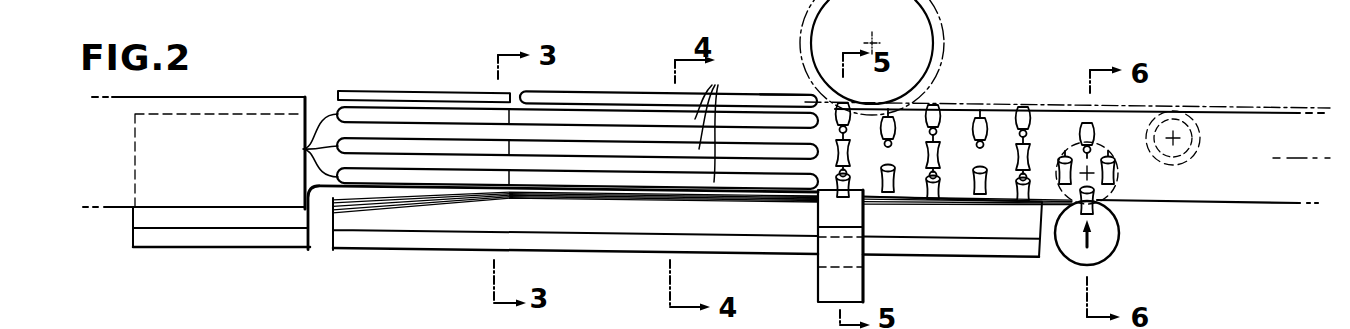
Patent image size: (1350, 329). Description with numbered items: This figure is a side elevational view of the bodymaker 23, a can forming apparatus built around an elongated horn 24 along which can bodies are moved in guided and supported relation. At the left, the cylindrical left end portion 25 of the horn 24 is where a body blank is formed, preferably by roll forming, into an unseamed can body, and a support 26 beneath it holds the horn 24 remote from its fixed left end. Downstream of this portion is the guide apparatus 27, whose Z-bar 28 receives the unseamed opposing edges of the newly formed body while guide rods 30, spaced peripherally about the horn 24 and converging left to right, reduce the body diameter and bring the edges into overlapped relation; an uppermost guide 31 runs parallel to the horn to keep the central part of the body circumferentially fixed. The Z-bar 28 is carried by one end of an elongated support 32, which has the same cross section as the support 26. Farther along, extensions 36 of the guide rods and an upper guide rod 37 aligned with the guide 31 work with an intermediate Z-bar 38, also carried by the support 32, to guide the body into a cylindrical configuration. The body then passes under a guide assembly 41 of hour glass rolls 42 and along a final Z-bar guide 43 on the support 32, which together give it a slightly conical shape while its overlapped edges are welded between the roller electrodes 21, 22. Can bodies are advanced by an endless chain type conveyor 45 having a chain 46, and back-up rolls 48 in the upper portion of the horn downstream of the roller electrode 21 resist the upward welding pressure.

The roller electrode 21 is at (1120, 172).
The roller electrode 22 is at (1108, 233).
The bodymaker 23 is at (590, 88).
The horn 24 is at (1233, 192).
The left end portion of the horn 25 is at (255, 100).
The support 26 is at (201, 250).
The guide apparatus 27 is at (446, 89).
The Z-bar 28 is at (423, 202).
The guide rods 30 is at (302, 152).
The uppermost guide 31 is at (375, 90).
The elongated support 32 is at (404, 256).
The extensions 36 is at (720, 124).
The upper guide rod 37 is at (775, 93).
The intermediate Z-bar 38 is at (653, 204).
The guide assembly 41 is at (957, 119).
The hour glass rolls 42 is at (1029, 111).
The final Z-bar guide 43 is at (963, 207).
The endless chain type conveyor 45 is at (802, 22).
The chain 46 is at (1240, 103).
The back-up rolls 48 is at (1202, 138).